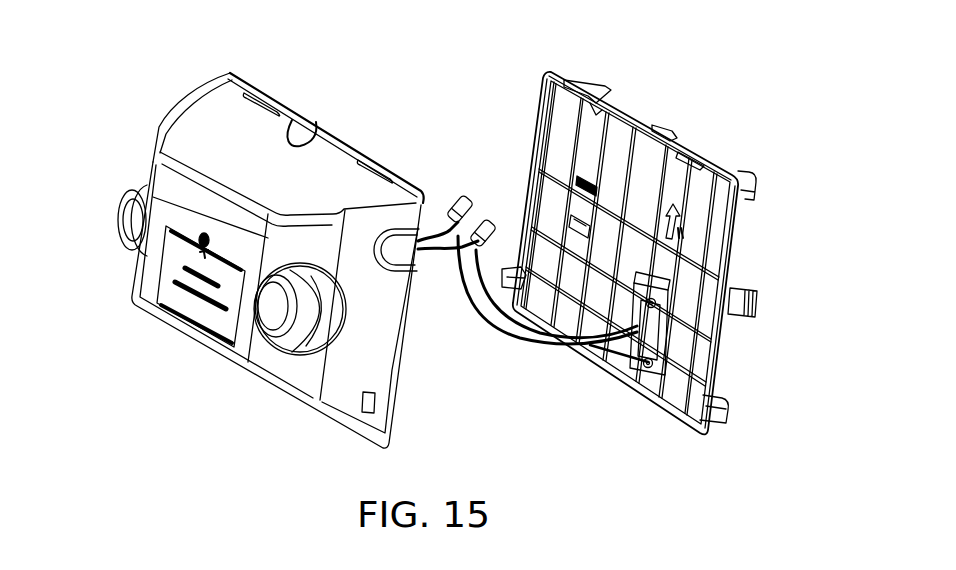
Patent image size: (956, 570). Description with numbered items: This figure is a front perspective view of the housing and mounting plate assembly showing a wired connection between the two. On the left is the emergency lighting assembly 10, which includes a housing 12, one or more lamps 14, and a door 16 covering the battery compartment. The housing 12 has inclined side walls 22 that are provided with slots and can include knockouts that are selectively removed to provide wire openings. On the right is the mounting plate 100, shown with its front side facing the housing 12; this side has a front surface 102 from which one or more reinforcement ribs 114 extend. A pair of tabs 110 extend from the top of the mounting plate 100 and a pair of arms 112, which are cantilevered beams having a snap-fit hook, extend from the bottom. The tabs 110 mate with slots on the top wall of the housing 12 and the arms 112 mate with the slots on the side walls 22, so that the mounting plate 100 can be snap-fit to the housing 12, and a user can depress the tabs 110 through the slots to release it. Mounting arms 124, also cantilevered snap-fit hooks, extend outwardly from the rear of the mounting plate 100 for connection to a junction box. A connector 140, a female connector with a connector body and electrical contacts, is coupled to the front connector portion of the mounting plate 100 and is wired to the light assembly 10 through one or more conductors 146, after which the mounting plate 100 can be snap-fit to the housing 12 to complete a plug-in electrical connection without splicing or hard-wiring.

The emergency lighting assembly 10 is at (127, 119).
The housing 12 is at (240, 369).
The lamp 14 is at (116, 196).
The door 16 is at (168, 291).
The side wall 22 is at (212, 100).
The mounting plate 100 is at (531, 63).
The front surface 102 is at (544, 149).
The tab 110 is at (583, 86).
The arm 112 is at (720, 421).
The reinforcement rib 114 is at (690, 262).
The mounting arm 124 is at (757, 303).
The connector 140 is at (649, 368).
The conductor 146 is at (474, 320).